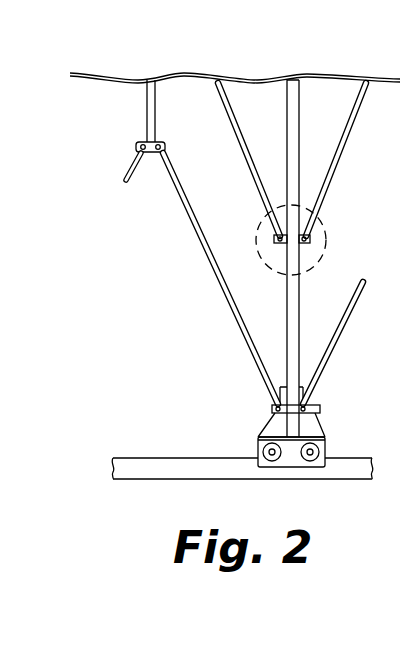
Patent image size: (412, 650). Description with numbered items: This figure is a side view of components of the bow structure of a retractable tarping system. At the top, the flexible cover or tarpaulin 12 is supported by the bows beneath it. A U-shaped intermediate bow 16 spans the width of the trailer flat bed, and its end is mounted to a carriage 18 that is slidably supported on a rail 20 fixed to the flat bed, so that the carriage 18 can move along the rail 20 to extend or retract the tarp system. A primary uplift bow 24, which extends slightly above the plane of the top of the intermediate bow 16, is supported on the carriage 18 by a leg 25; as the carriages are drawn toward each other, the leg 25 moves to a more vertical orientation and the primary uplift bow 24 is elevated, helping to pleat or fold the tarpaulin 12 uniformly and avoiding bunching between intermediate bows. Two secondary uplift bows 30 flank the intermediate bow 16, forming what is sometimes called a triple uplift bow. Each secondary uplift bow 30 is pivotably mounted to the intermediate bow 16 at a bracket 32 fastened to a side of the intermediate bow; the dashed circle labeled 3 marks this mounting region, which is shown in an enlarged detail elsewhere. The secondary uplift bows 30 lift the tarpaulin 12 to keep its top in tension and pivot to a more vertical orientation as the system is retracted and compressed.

The tarpaulin 12 is at (248, 78).
The intermediate bow 16 is at (301, 118).
The carriage 18 is at (310, 427).
The rail 20 is at (187, 458).
The primary uplift bow 24 is at (157, 117).
The leg 25 is at (189, 229).
The secondary uplift bow 30 is at (345, 158).
The bracket 32 is at (312, 242).
The detail area of FIG. 3 is at (257, 253).